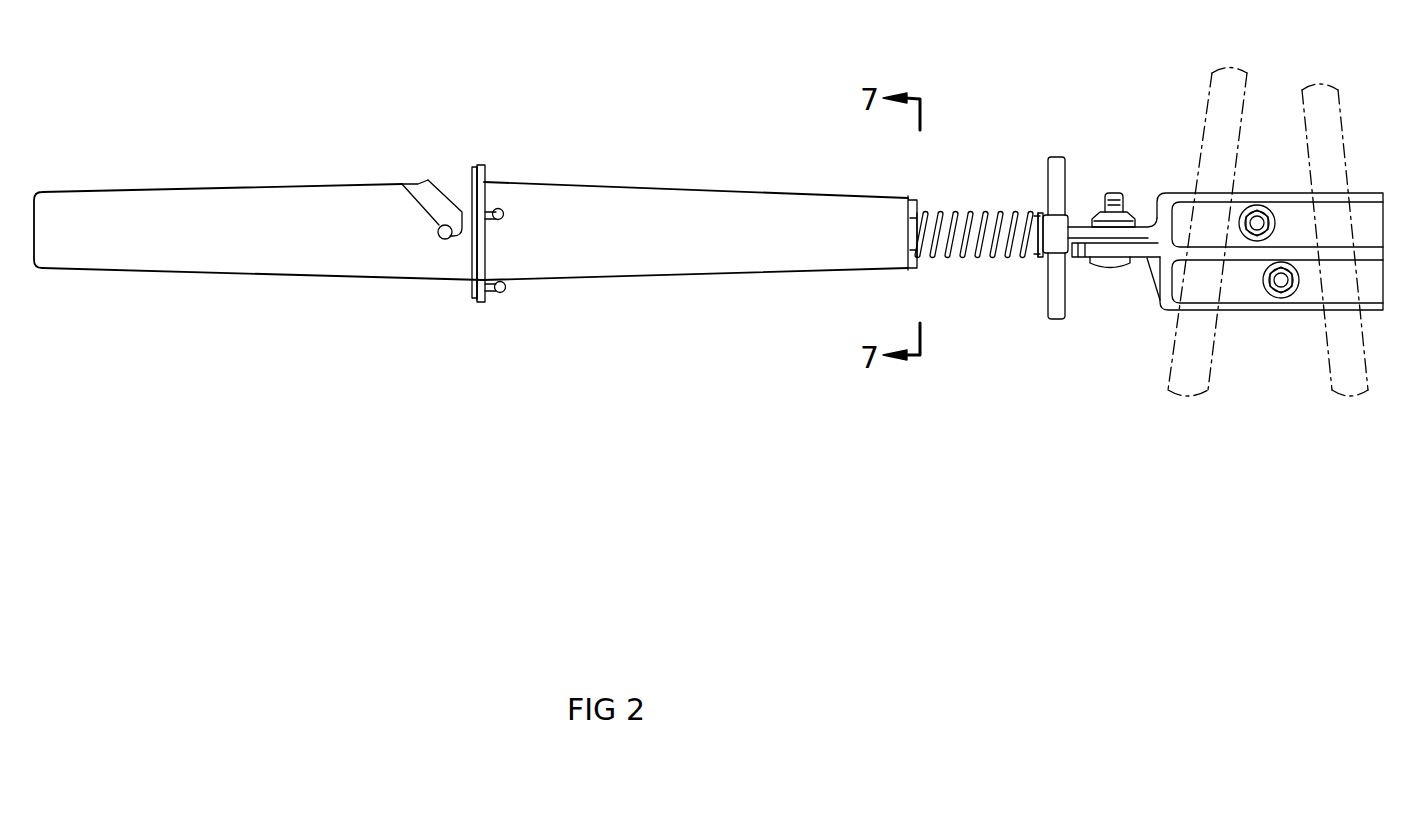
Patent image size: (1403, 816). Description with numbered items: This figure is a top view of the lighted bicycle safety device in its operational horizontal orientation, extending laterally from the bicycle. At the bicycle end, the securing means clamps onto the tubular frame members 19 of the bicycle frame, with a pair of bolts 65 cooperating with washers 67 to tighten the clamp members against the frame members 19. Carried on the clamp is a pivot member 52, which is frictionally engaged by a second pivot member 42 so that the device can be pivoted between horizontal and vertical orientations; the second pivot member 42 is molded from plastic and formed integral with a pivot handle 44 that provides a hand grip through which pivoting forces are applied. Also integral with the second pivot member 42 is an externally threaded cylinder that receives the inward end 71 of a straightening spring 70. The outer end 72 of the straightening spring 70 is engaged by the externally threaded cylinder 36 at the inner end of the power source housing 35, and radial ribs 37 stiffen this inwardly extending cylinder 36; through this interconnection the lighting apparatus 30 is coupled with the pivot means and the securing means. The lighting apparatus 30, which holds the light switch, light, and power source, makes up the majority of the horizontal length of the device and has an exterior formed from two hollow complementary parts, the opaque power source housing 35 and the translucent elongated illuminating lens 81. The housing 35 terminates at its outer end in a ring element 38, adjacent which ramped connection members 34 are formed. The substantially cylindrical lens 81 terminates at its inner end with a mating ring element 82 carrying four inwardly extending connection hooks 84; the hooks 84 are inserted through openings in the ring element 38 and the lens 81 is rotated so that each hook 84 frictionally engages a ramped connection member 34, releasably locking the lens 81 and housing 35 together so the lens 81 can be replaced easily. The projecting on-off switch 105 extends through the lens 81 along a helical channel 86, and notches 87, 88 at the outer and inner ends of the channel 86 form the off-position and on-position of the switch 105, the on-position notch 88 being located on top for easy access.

The frame members 19 is at (1210, 110).
The lighting apparatus 30 is at (440, 296).
The ramped connection member 34 is at (492, 275).
The power source housing 35 is at (672, 190).
The externally threaded cylinder 36 is at (975, 285).
The radial ribs 37 is at (903, 233).
The ring element 38 is at (477, 165).
The second pivot member 42 is at (1079, 227).
The pivot handle 44 is at (1052, 178).
The pivot member 52 is at (1102, 268).
The bolts 65 is at (1257, 209).
The washers 67 is at (1268, 210).
The straightening spring 70 is at (977, 282).
The inward end 71 is at (1040, 255).
The outer end 72 is at (948, 253).
The elongated illuminating lens 81 is at (120, 190).
The mating ring element 82 is at (478, 302).
The connection hooks 84 is at (497, 294).
The helical channel 86 is at (460, 156).
The notch 87 is at (420, 183).
The notch 88 is at (445, 239).
The projecting on-off switch 105 is at (438, 238).